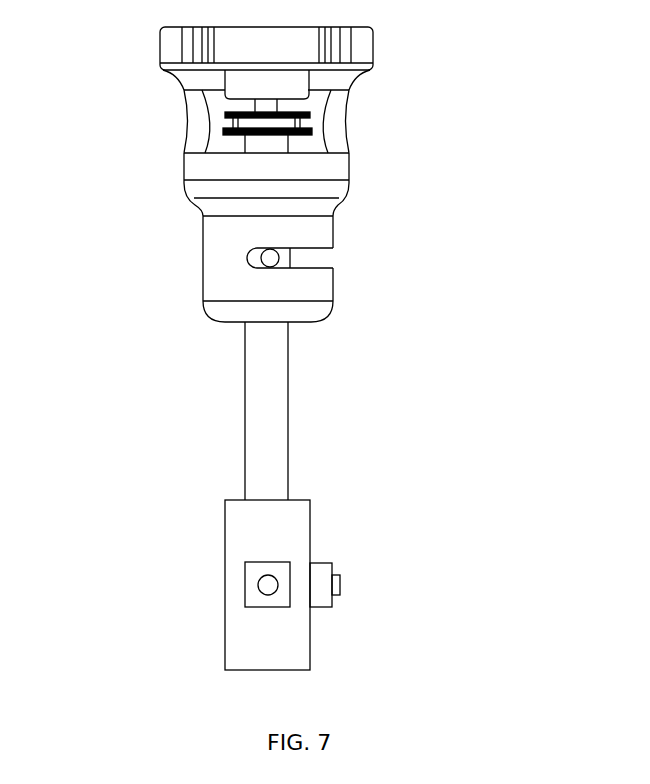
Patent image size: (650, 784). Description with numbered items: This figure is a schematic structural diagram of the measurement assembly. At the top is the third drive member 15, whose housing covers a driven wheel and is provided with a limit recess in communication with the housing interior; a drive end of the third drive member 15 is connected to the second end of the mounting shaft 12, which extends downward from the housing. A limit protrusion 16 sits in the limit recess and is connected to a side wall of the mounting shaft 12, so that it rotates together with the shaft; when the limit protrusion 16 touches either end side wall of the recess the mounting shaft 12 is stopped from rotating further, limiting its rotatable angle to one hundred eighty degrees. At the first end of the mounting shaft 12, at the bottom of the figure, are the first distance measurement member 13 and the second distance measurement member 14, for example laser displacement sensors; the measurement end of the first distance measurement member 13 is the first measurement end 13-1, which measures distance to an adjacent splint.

The mounting shaft 12 is at (245, 412).
The first distance measurement member 13 is at (420, 560).
The first measurement end 13-1 is at (336, 585).
The second distance measurement member 14 is at (245, 580).
The third drive member 15 is at (268, 92).
The limit protrusion 16 is at (272, 260).